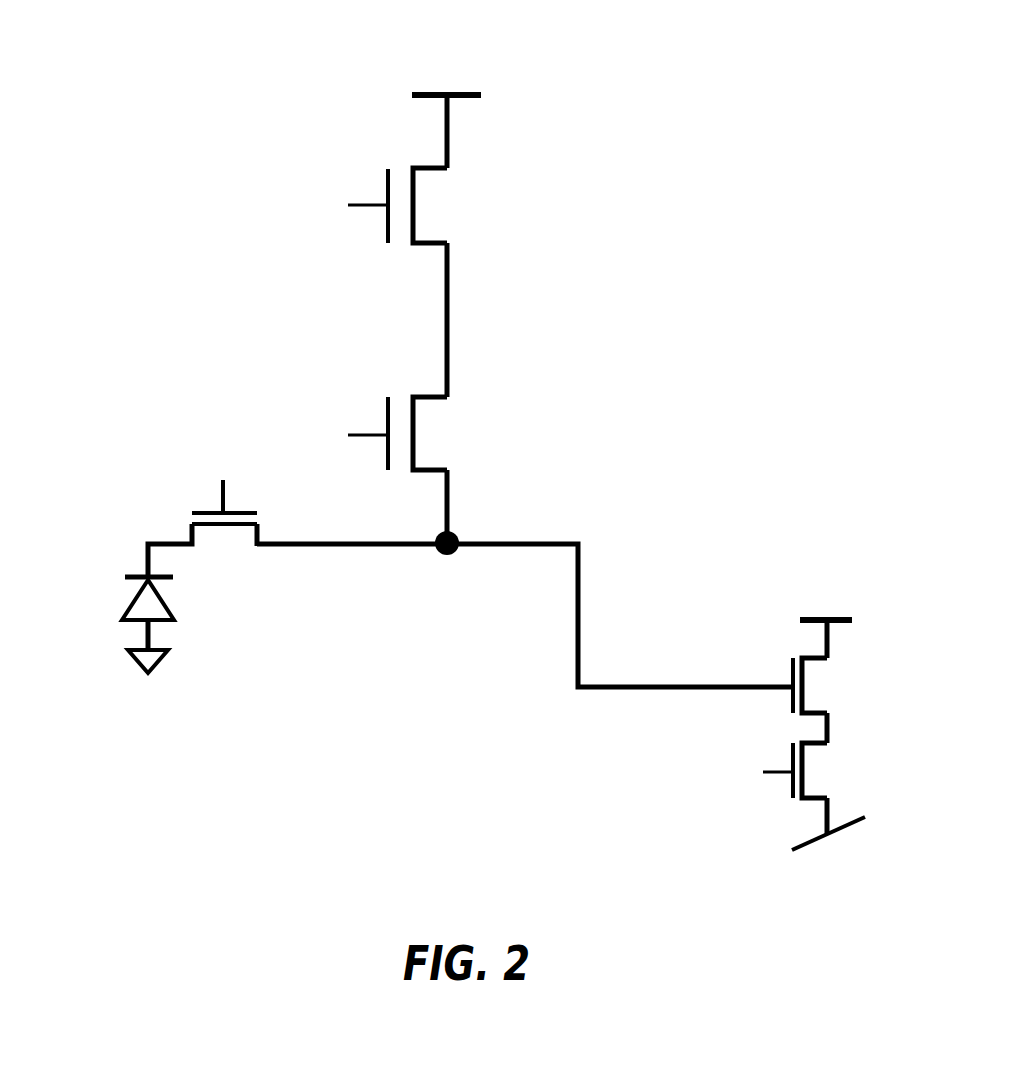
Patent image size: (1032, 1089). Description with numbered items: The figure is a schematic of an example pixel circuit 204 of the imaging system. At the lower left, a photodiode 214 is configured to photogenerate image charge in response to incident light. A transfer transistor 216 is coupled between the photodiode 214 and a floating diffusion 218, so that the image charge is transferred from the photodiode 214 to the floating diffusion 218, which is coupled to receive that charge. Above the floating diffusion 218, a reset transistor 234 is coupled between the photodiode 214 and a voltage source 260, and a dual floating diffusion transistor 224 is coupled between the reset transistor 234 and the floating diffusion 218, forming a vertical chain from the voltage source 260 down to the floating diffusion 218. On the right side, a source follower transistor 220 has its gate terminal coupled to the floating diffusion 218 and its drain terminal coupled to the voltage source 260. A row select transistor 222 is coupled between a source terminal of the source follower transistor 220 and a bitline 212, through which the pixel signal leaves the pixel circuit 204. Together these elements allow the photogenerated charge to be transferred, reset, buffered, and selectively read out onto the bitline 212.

The pixel circuit 204 is at (222, 30).
The voltage source PIXVDD 260 is at (492, 80).
The reset transistor 234 is at (325, 218).
The dual floating diffusion transistor 224 is at (320, 424).
The floating diffusion 218 is at (400, 566).
The transfer transistor 216 is at (182, 480).
The photodiode 214 is at (72, 604).
The source follower transistor 220 is at (866, 686).
The row select transistor 222 is at (866, 776).
The bitline 212 is at (848, 868).